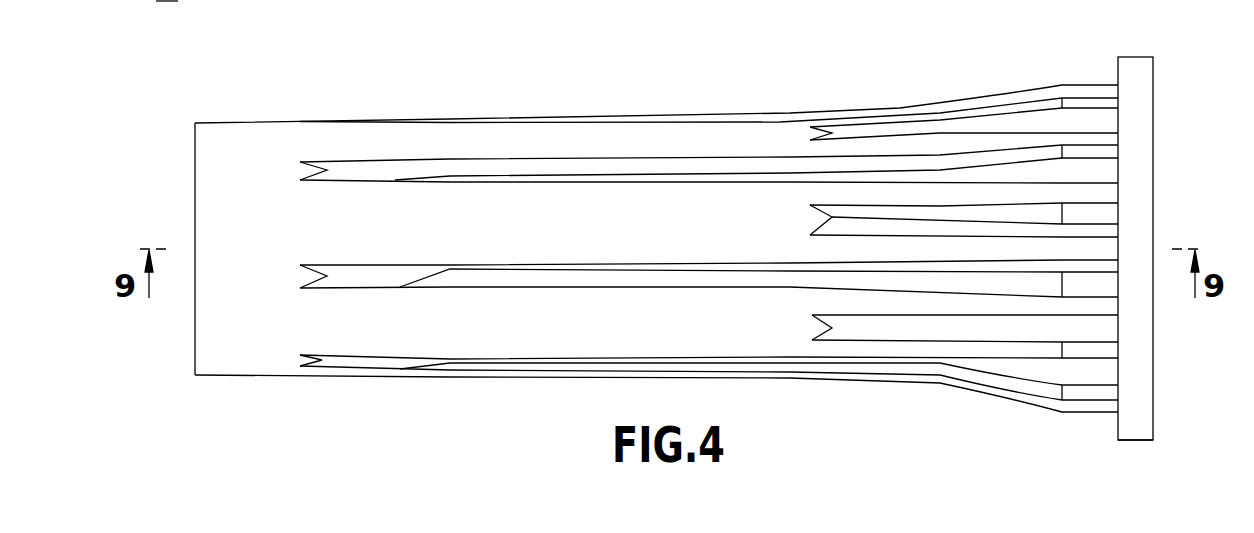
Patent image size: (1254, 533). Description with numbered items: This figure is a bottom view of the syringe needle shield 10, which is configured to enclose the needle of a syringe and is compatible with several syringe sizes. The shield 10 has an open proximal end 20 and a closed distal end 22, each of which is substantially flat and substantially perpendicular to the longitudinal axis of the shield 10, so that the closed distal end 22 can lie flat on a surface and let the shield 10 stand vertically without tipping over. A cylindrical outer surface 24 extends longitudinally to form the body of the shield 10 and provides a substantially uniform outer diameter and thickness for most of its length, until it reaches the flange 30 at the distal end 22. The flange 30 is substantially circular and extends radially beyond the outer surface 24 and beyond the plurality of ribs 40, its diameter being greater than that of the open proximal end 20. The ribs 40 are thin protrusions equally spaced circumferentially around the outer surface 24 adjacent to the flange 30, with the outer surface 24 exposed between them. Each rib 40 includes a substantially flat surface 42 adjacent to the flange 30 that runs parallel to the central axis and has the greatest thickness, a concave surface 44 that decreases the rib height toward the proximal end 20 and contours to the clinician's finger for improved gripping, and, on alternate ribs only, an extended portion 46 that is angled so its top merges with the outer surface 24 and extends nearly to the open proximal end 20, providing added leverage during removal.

The syringe needle shield 10 is at (345, 79).
The open proximal end 20 is at (195, 314).
The closed distal end 22 is at (1154, 78).
The cylindrical outer surface 24 is at (499, 133).
The flange 30 is at (1125, 441).
The plurality of ribs 40 is at (1083, 85).
The substantially flat surface 42 is at (1090, 272).
The concave surface 44 is at (958, 128).
The extended portion 46 is at (745, 112).